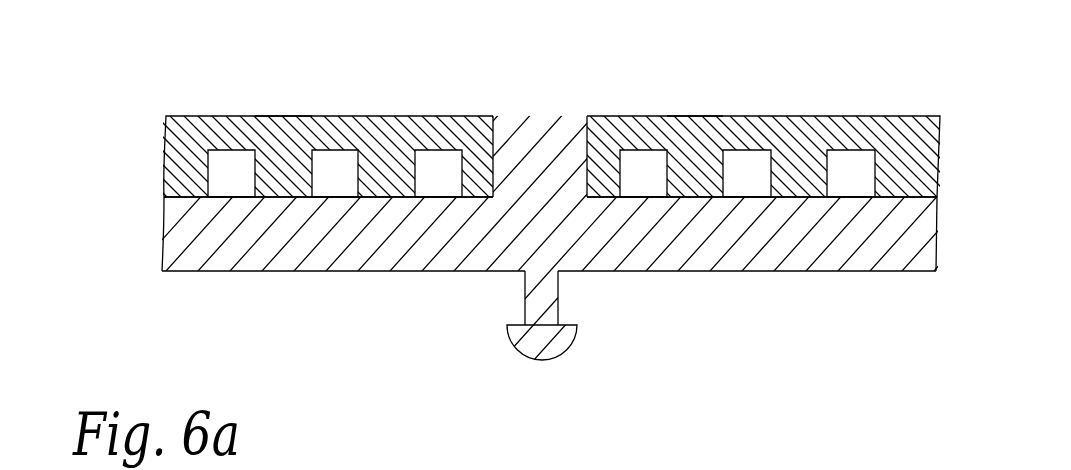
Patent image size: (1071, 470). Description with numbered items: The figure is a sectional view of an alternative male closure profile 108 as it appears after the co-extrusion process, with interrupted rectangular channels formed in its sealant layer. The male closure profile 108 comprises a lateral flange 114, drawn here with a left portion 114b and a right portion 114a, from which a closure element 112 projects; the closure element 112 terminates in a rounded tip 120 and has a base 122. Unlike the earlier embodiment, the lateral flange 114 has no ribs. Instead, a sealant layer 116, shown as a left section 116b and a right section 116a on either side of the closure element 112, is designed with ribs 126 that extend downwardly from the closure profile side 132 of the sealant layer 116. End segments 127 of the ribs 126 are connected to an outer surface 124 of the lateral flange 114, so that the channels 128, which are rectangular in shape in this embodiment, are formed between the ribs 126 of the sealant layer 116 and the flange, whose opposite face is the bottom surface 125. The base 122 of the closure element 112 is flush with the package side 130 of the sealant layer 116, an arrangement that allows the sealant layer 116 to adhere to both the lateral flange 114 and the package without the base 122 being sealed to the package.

The male closure profile 108 is at (464, 352).
The closure element 112 is at (595, 292).
The lateral flange 114 is at (138, 231).
The right portion of lower substrate 114a is at (810, 255).
The left portion of lower substrate 114b is at (358, 246).
The sealant layer 116 is at (138, 143).
The right section of upper layer 116a is at (713, 128).
The left section of upper layer 116b is at (323, 130).
The rounded tip 120 is at (568, 348).
The base 122 is at (557, 116).
The outer surface 124 is at (280, 198).
The bottom surface 125 is at (192, 271).
The ribs 126 is at (176, 187).
The end segments 127 is at (272, 196).
The channels 128 is at (222, 158).
The package side 130 is at (477, 116).
The closure profile side 132 is at (345, 135).